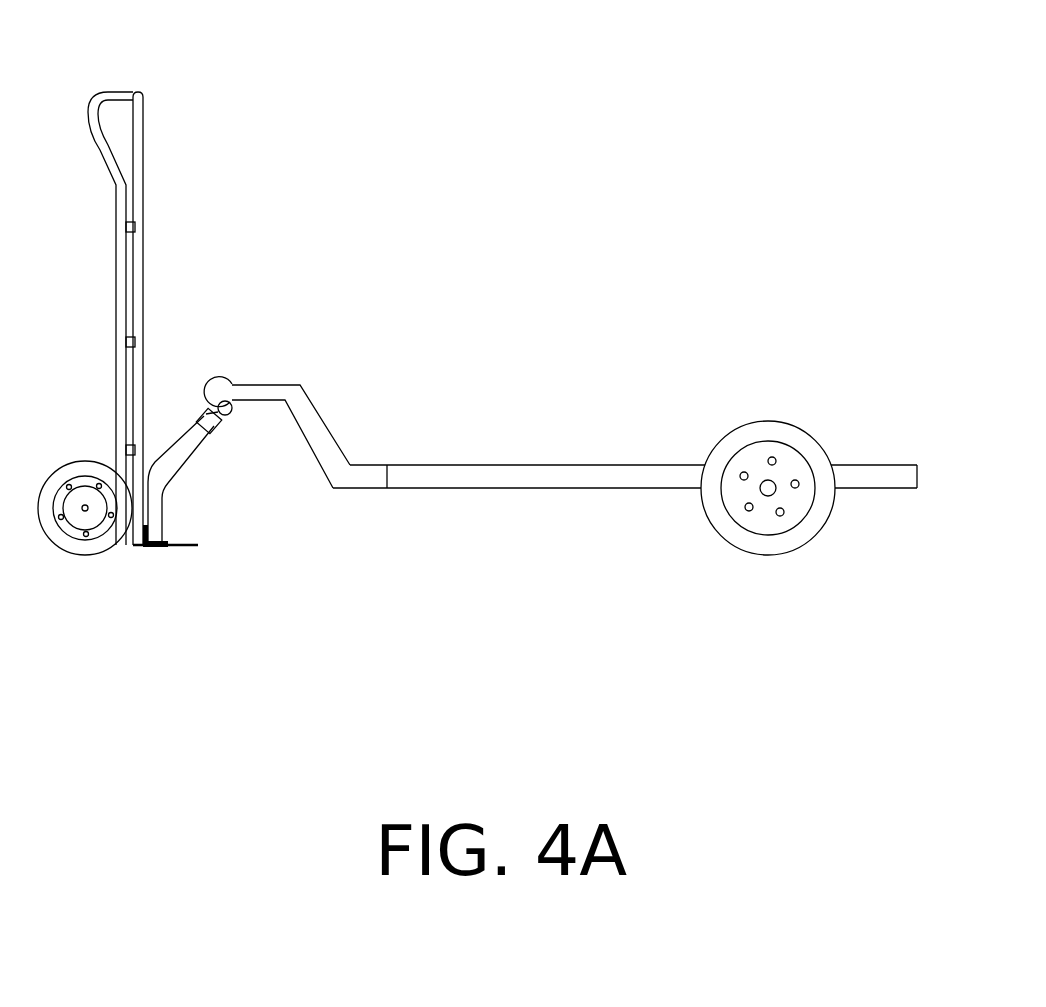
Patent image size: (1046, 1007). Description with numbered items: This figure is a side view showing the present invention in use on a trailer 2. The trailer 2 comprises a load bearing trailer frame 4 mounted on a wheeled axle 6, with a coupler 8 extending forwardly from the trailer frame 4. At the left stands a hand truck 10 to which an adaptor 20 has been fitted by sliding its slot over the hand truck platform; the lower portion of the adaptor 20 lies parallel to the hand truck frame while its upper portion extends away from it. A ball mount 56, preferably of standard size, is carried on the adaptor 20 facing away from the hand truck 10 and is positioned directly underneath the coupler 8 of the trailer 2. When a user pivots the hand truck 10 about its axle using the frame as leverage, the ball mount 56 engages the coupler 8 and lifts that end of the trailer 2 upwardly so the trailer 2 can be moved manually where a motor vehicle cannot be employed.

The hand truck 10 is at (195, 101).
The trailer 2 is at (558, 418).
The trailer frame 4 is at (665, 465).
The wheeled axle 6 is at (768, 488).
The coupler 8 is at (230, 378).
The ball mount 56 is at (230, 413).
The adaptor 20 is at (172, 504).